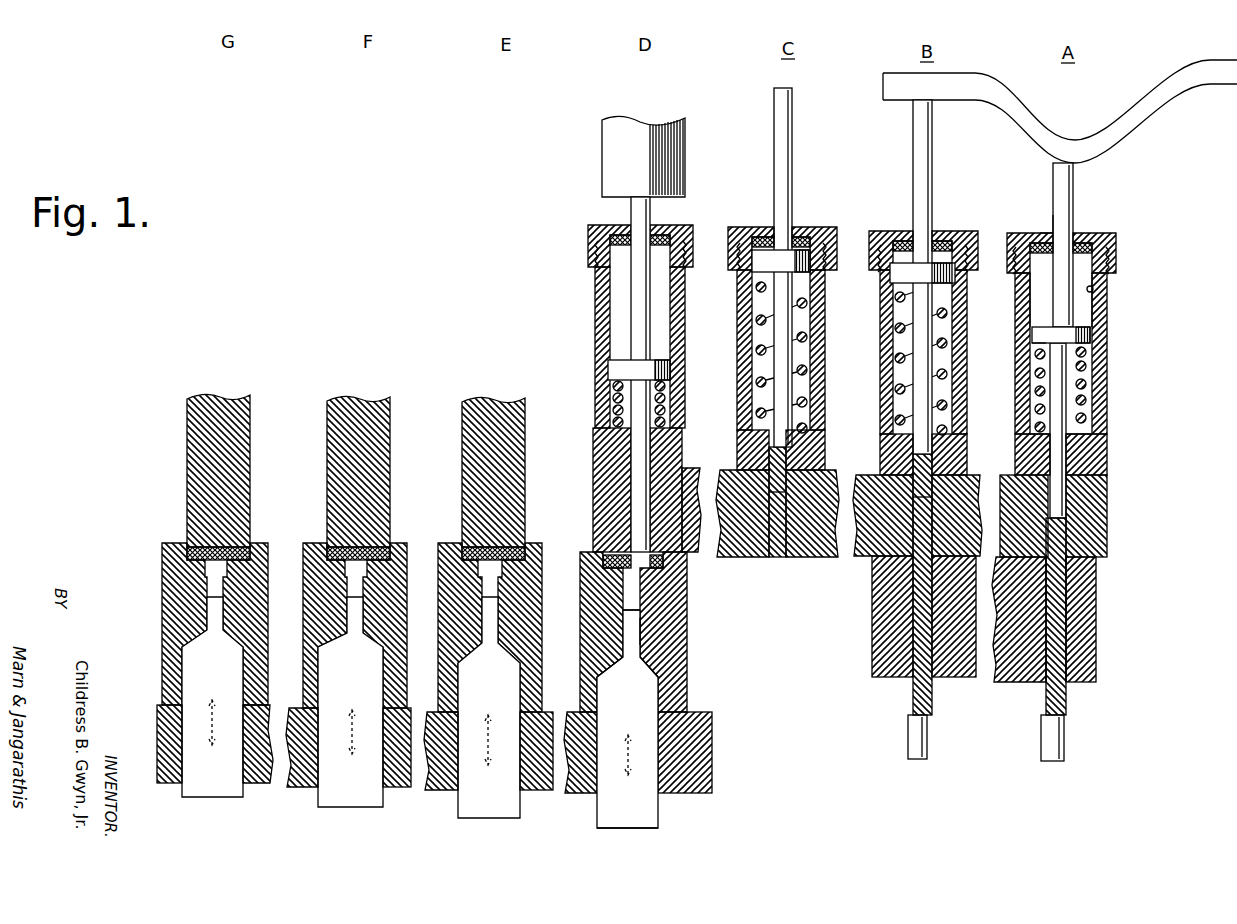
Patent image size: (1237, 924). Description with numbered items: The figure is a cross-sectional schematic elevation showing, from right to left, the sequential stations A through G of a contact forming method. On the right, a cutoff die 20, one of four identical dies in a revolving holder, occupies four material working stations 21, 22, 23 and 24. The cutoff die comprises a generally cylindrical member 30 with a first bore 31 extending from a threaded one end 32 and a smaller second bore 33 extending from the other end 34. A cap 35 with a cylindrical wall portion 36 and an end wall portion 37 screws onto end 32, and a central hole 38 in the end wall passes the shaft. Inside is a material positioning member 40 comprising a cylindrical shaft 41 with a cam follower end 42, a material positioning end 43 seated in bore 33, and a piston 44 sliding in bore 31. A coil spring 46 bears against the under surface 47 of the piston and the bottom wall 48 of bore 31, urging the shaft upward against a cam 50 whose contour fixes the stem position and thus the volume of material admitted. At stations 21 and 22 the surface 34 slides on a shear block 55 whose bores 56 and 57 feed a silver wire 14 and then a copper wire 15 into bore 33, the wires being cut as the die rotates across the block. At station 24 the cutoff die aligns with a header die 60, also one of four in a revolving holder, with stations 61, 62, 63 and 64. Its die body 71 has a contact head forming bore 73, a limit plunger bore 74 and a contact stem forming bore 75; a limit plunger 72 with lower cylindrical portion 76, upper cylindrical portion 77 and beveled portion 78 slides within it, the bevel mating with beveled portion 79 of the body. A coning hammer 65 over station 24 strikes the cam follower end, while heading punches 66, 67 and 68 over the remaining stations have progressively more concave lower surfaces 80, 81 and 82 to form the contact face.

The wire 14 is at (1042, 745).
The second wire 15 is at (932, 506).
The cutoff die 20 is at (1073, 439).
The material working station 21 is at (1106, 320).
The material working station 22 is at (967, 293).
The material working station 23 is at (823, 293).
The material working station 24 is at (684, 293).
The cylindrical member 30 is at (1096, 452).
The first bore 31 is at (1100, 300).
The one end 32 is at (1107, 255).
The second bore 33 is at (1062, 496).
The other end 34 is at (1096, 562).
The cap 35 is at (1093, 234).
The cylindrical wall portion 36 is at (1113, 272).
The end wall portion 37 is at (1045, 235).
The hole 38 is at (1057, 233).
The material positioning member 40 is at (1034, 309).
The cylindrical shaft 41 is at (1090, 392).
The cam follower end 42 is at (1075, 198).
The material positioning end 43 is at (1060, 478).
The piston 44 is at (1089, 338).
The coil spring 46 is at (1092, 372).
The under surface 47 is at (1025, 352).
The bottom wall 48 is at (1092, 432).
The cam 50 is at (1158, 95).
The shear block 55 is at (1090, 656).
The bore 56 is at (1060, 598).
The bore 57 is at (910, 609).
The header die 60 is at (642, 704).
The material working station 61 is at (580, 630).
The material working station 62 is at (438, 620).
The material working station 63 is at (305, 620).
The material working station 64 is at (160, 627).
The coning hammer 65 is at (600, 152).
The heading punch 66 is at (463, 436).
The heading punch 67 is at (330, 435).
The heading punch 68 is at (190, 437).
The die body 71 is at (673, 592).
The limit plunger 72 is at (618, 714).
The contact head forming bore 73 is at (612, 565).
The limit plunger bore 74 is at (656, 782).
The contact stem forming bore 75 is at (634, 620).
The lower cylindrical portion 76 is at (628, 822).
The upper cylindrical portion 77 is at (637, 640).
The beveled portion 78 is at (650, 668).
The beveled portion 79 is at (610, 655).
The concave lower surface 80 is at (503, 546).
The concave lower surface 81 is at (364, 545).
The concave lower surface 82 is at (224, 543).